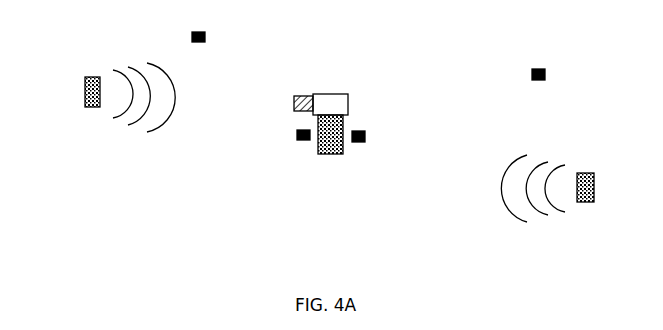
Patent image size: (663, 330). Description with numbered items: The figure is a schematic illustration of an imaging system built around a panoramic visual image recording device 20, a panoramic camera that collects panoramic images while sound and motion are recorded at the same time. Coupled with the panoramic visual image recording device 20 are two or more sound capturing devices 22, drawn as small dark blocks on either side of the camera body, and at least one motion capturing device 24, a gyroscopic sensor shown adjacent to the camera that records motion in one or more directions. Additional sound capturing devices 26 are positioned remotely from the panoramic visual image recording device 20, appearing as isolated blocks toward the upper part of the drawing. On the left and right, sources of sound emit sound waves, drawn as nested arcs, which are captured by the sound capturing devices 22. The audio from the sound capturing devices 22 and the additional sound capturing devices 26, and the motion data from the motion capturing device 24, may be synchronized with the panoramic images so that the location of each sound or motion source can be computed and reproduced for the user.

The panoramic visual image recording device 20 is at (357, 110).
The sound capturing devices 22 is at (358, 150).
The motion capturing device 24 is at (288, 116).
The additional sound capturing devices 26 is at (210, 38).